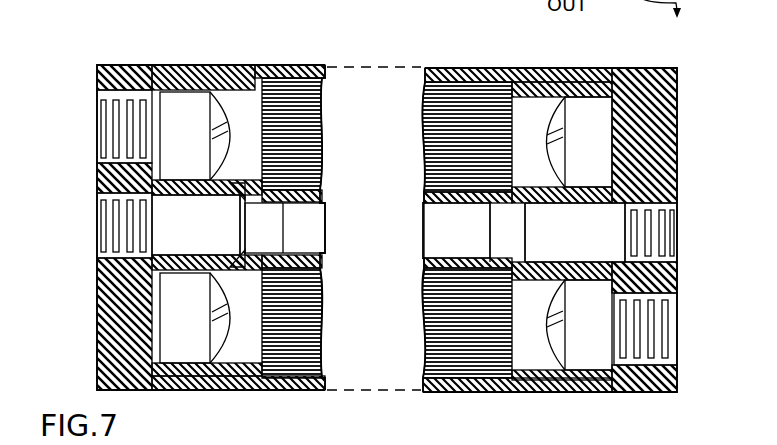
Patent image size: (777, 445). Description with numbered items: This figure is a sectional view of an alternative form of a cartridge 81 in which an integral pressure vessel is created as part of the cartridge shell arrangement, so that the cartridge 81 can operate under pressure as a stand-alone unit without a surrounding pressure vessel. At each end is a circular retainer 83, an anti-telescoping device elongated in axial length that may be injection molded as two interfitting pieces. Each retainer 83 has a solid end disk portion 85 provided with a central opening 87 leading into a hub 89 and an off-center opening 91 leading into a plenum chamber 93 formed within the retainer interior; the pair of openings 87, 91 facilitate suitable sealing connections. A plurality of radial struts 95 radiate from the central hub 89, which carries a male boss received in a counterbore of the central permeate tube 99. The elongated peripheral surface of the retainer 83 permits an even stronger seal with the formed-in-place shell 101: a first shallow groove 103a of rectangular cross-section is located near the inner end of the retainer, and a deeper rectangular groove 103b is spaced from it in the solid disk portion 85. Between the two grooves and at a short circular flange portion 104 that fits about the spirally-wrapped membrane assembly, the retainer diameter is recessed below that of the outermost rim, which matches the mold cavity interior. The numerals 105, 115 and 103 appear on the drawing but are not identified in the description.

The optical connector assembly 81 is at (401, 48).
The housing wall 83 is at (197, 67).
The end housing block 85 is at (107, 316).
The slotted retaining sleeve 87 is at (105, 222).
The ferrule / fiber holder 89 is at (174, 212).
The slotted retaining sleeve 91 is at (98, 122).
The lens 93 is at (190, 140).
The lens 95 is at (547, 137).
The ferrule / fiber holder 99 is at (450, 218).
The coil spring / sleeve 101 is at (465, 67).
The housing portion 103a is at (232, 67).
The housing end portion 103b is at (132, 66).
The housing wall 104 is at (287, 391).
The housing 105 is at (406, 436).
The housing 115 is at (170, 440).
The housing 103 is at (220, 440).